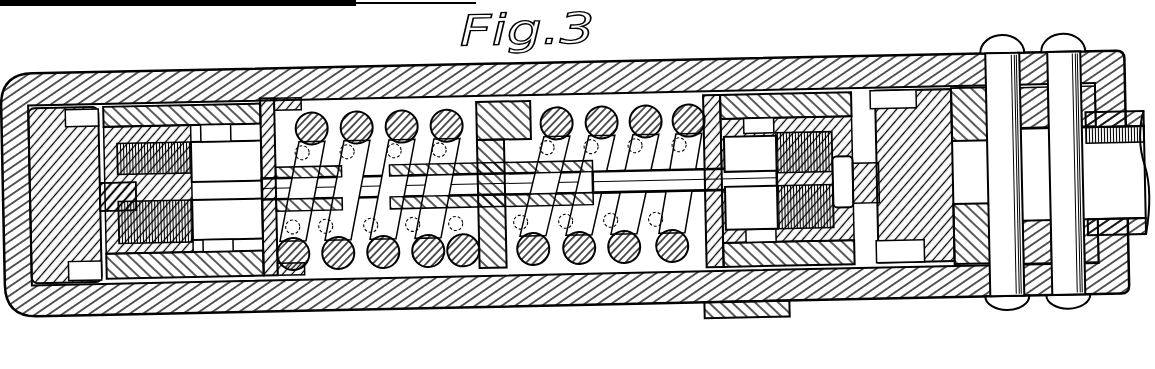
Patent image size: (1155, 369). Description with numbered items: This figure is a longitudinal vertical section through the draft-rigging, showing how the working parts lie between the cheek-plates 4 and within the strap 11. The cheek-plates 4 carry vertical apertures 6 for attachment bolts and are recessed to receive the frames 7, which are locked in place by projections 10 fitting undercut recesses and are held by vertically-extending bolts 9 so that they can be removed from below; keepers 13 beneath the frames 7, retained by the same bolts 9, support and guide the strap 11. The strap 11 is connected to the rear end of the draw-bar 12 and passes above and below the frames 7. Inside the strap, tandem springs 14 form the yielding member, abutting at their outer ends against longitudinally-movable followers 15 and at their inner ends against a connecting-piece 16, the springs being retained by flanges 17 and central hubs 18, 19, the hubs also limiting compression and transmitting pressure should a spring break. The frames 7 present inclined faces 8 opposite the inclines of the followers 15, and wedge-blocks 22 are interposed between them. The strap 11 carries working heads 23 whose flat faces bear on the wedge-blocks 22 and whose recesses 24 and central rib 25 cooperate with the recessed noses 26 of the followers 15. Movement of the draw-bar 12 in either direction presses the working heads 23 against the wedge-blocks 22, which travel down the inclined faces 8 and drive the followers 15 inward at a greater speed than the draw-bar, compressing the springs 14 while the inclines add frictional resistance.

The cheek-plates 4 is at (393, 7).
The vertical apertures 6 is at (70, 8).
The frames 7 is at (200, 106).
The inclined faces 8 is at (155, 10).
The vertically-extending bolts 9 is at (215, 11).
The projections 10 is at (266, 12).
The strap 11 is at (297, 112).
The draw-bar 12 is at (1085, 174).
The keepers 13 is at (747, 321).
The tandem springs 14 is at (432, 276).
The followers 15 is at (477, 183).
The connecting-piece 16 is at (519, 184).
The flanges 17 is at (685, 110).
The central hubs 18 is at (491, 187).
The central hubs 19 is at (520, 185).
The wedge-blocks 22 is at (116, 9).
The working heads 23 is at (63, 110).
The recesses 24 is at (907, 328).
The central rib 25 is at (450, 204).
The recessed noses 26 is at (866, 122).